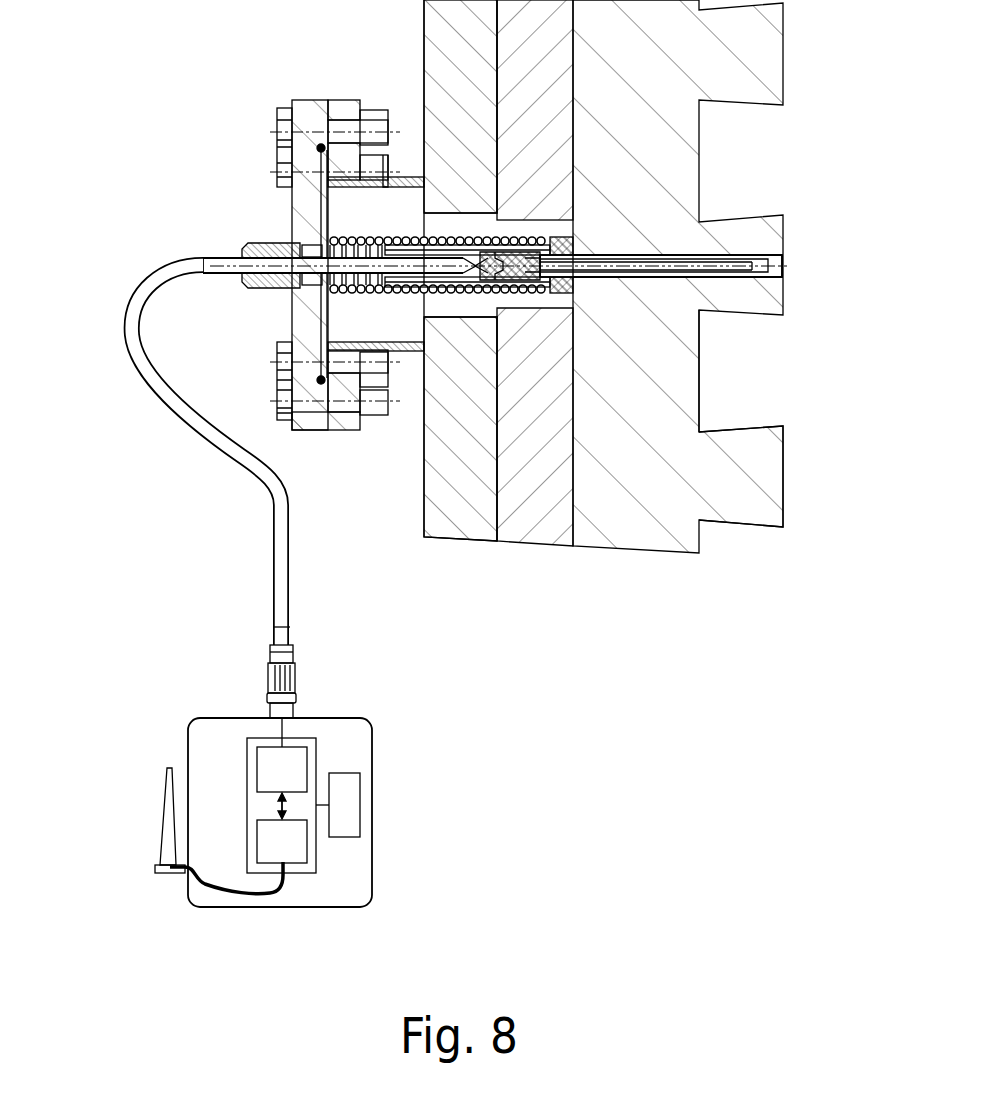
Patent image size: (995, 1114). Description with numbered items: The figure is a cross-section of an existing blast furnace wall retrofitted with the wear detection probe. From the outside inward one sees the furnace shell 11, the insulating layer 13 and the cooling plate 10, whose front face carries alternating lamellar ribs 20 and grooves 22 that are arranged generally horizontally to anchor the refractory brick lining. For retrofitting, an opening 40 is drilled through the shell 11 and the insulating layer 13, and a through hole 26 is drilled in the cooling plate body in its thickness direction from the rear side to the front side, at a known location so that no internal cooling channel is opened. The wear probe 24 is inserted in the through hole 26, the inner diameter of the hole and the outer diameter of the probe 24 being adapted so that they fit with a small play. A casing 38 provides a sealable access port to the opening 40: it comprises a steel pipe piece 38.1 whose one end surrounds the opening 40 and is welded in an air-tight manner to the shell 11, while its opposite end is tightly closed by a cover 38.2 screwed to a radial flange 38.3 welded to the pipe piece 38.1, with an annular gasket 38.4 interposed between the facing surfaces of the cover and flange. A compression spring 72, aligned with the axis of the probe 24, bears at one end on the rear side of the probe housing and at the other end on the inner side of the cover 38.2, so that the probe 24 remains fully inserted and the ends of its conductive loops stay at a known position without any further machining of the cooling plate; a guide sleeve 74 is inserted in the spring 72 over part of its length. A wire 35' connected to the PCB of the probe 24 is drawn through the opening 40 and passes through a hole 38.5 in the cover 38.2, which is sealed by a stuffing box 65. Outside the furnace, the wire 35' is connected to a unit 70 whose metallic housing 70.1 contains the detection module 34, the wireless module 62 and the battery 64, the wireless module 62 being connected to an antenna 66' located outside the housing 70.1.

The cooling plate 10 is at (652, 528).
The furnace shell 11 is at (465, 528).
The insulating layer 13 is at (537, 528).
The lamellar ribs 20 is at (758, 463).
The grooves 22 is at (677, 365).
The wear probe 24 is at (725, 262).
The through hole 26 is at (690, 287).
The detection module 34 is at (290, 763).
The wire 35' is at (323, 219).
The casing 38 is at (320, 253).
The steel pipe piece 38.1 is at (413, 350).
The cover 38.2 is at (303, 320).
The radial flange 38.3 is at (343, 108).
The annular gasket 38.4 is at (318, 147).
The hole 38.5 is at (312, 246).
The opening 40 is at (401, 148).
The wireless module 62 is at (298, 845).
The battery 64 is at (350, 813).
The stuffing box 65 is at (288, 282).
The antenna 66' is at (166, 831).
The unit 70 is at (266, 590).
The metallic housing 70.1 is at (316, 750).
The compression spring 72 is at (343, 291).
The guide sleeve 74 is at (390, 250).